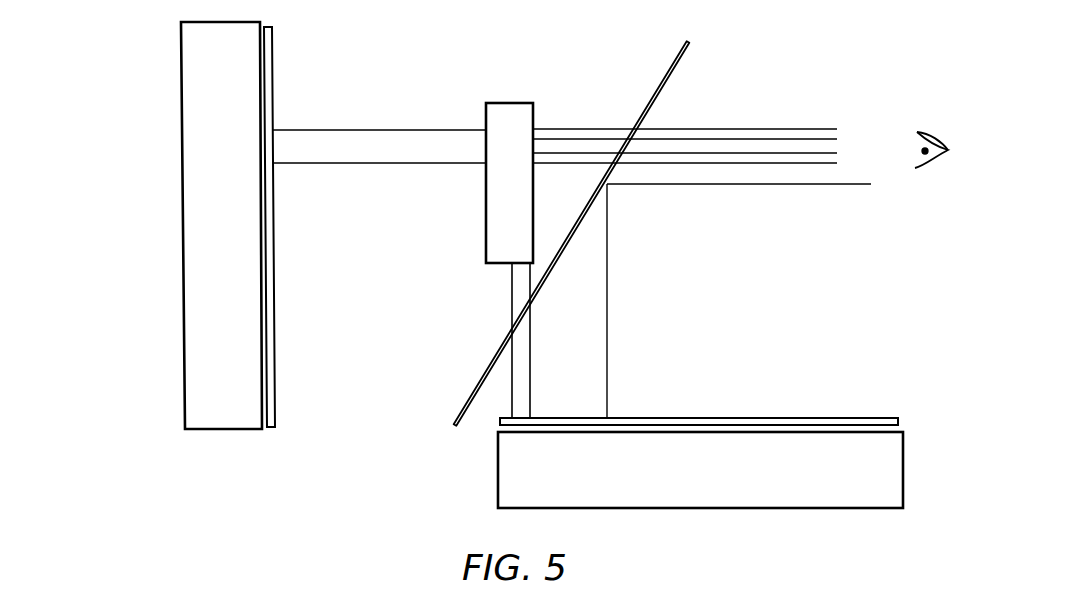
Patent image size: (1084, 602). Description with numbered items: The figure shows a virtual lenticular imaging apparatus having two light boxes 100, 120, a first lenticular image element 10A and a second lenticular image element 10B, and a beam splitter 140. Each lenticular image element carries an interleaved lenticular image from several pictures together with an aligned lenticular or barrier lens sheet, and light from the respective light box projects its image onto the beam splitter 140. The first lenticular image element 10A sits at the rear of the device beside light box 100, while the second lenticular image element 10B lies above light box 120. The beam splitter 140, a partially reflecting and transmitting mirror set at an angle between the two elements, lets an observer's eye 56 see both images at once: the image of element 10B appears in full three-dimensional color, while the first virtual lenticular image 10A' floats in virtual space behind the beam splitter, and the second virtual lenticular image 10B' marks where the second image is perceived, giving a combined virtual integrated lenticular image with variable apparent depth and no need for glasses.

The light box 100 is at (181, 75).
The first lenticular image element 10A is at (318, 227).
The first virtual lenticular image 10A' is at (550, 232).
The beam splitter 140 is at (676, 80).
The second virtual lenticular image 10B' is at (665, 220).
The second lenticular image element 10B is at (699, 390).
The light box 120 is at (510, 485).
The observer's eye 56 is at (942, 155).